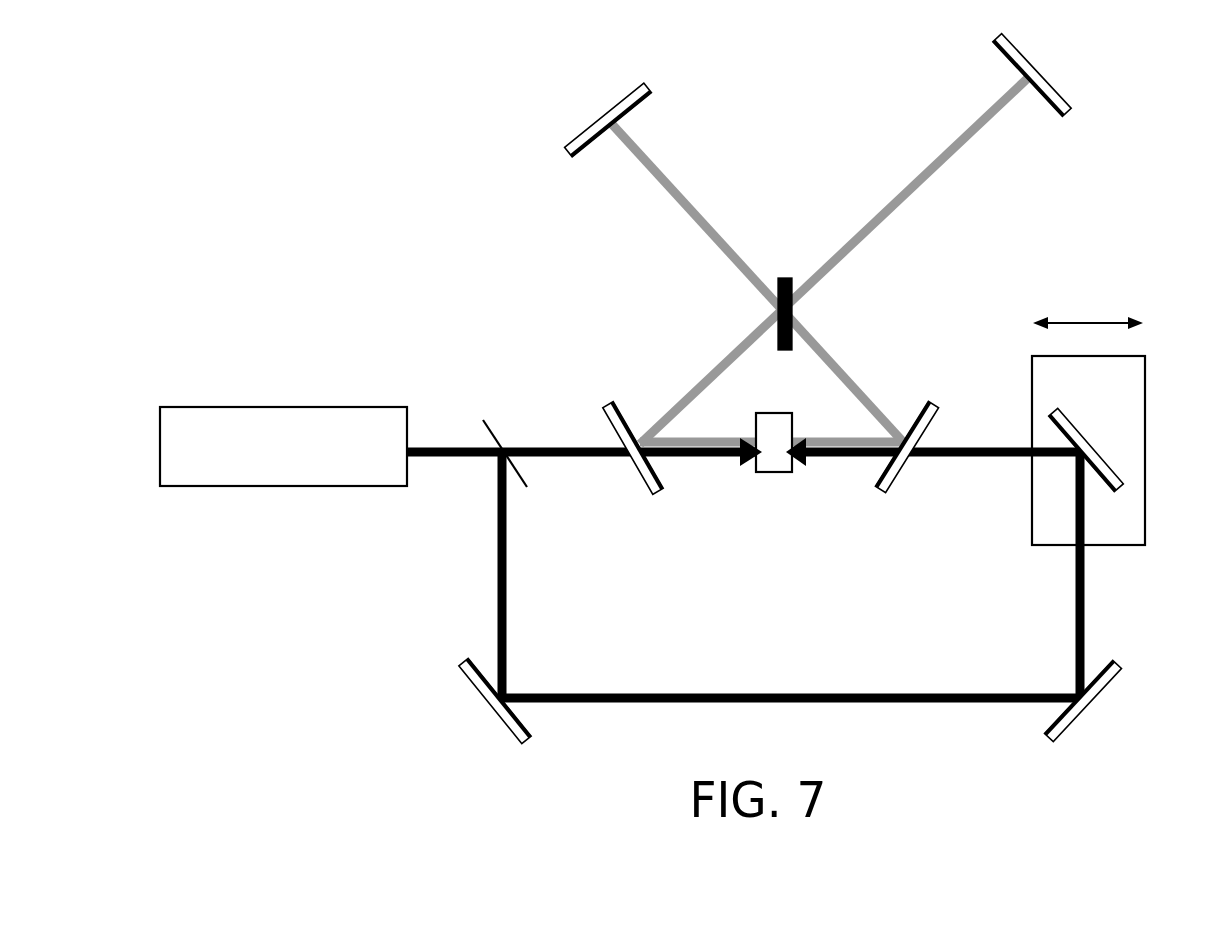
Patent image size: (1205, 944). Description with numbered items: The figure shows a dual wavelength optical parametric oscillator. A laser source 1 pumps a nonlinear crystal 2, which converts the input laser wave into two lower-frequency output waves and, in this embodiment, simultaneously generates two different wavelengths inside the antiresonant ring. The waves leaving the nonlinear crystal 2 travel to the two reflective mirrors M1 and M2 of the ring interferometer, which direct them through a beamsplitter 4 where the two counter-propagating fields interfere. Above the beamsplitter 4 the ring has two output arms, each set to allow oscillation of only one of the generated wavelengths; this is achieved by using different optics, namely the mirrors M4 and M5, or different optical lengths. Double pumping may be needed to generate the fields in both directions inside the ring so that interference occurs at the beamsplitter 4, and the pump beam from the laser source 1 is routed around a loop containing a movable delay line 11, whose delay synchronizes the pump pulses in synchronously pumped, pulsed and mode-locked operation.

The laser source 1 is at (308, 405).
The nonlinear crystal 2 is at (772, 473).
The beamsplitter 4 is at (785, 277).
The delay line 11 is at (1077, 323).
The reflective mirror M1 is at (638, 472).
The reflective mirror M2 is at (897, 475).
The mirror M4 is at (583, 137).
The mirror M5 is at (1057, 92).